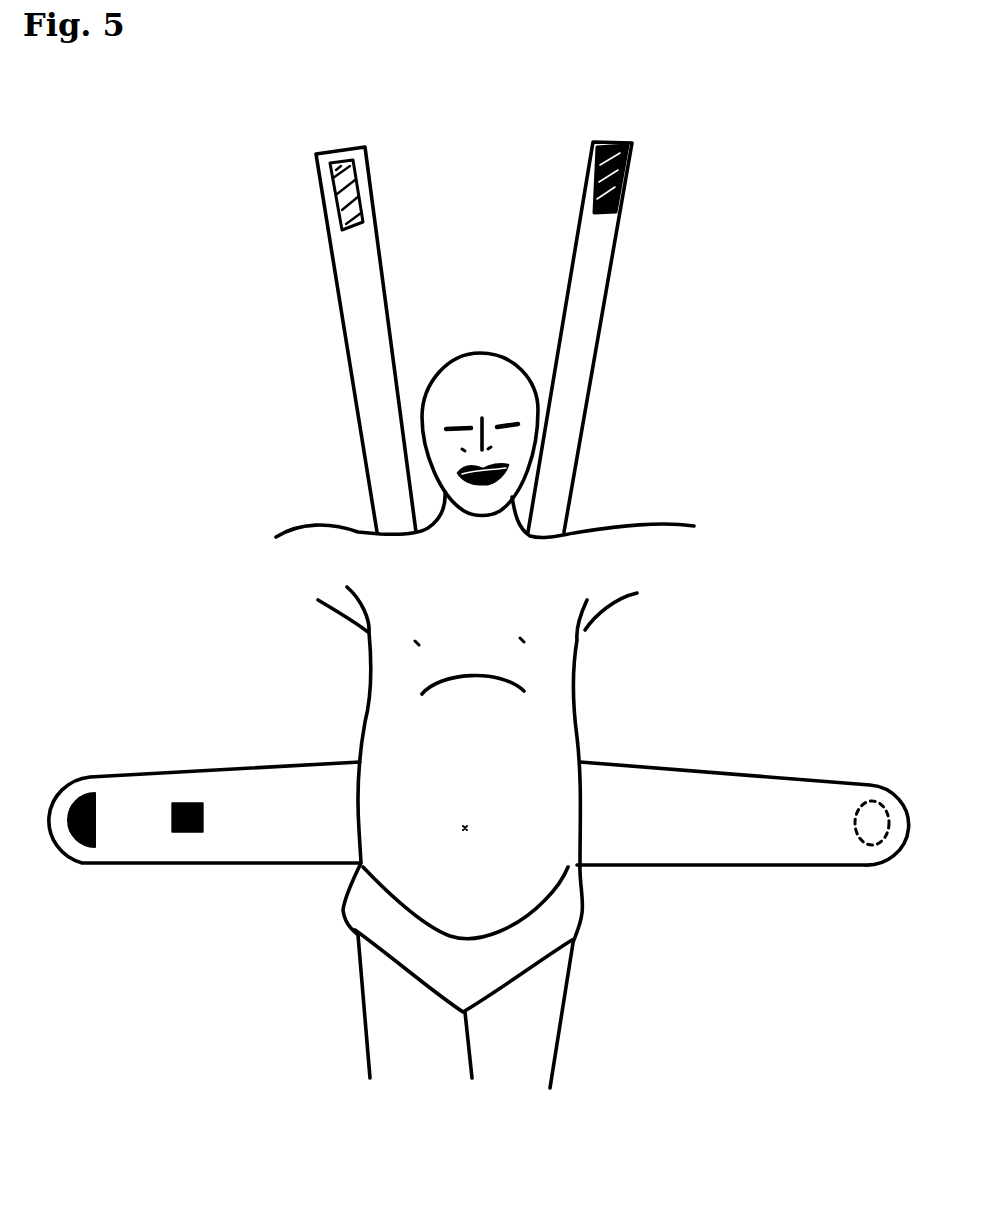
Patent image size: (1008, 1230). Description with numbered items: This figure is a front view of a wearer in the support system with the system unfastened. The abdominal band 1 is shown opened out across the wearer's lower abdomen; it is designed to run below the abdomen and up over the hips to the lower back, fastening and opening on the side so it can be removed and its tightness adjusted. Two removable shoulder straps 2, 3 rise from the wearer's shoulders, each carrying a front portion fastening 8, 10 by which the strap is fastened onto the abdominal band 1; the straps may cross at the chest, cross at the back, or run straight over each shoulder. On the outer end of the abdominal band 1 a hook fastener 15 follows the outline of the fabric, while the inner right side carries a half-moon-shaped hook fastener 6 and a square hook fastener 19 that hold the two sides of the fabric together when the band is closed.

The abdominal band 1 is at (690, 842).
The shoulder strap 2 is at (577, 383).
The shoulder strap 3 is at (367, 382).
The half-moon-shaped hook fastener 6 is at (83, 778).
The front portion fastening 8 is at (623, 185).
The front portion fastening 10 is at (325, 191).
The hook fastener 15 is at (873, 810).
The square hook fastener 19 is at (190, 803).